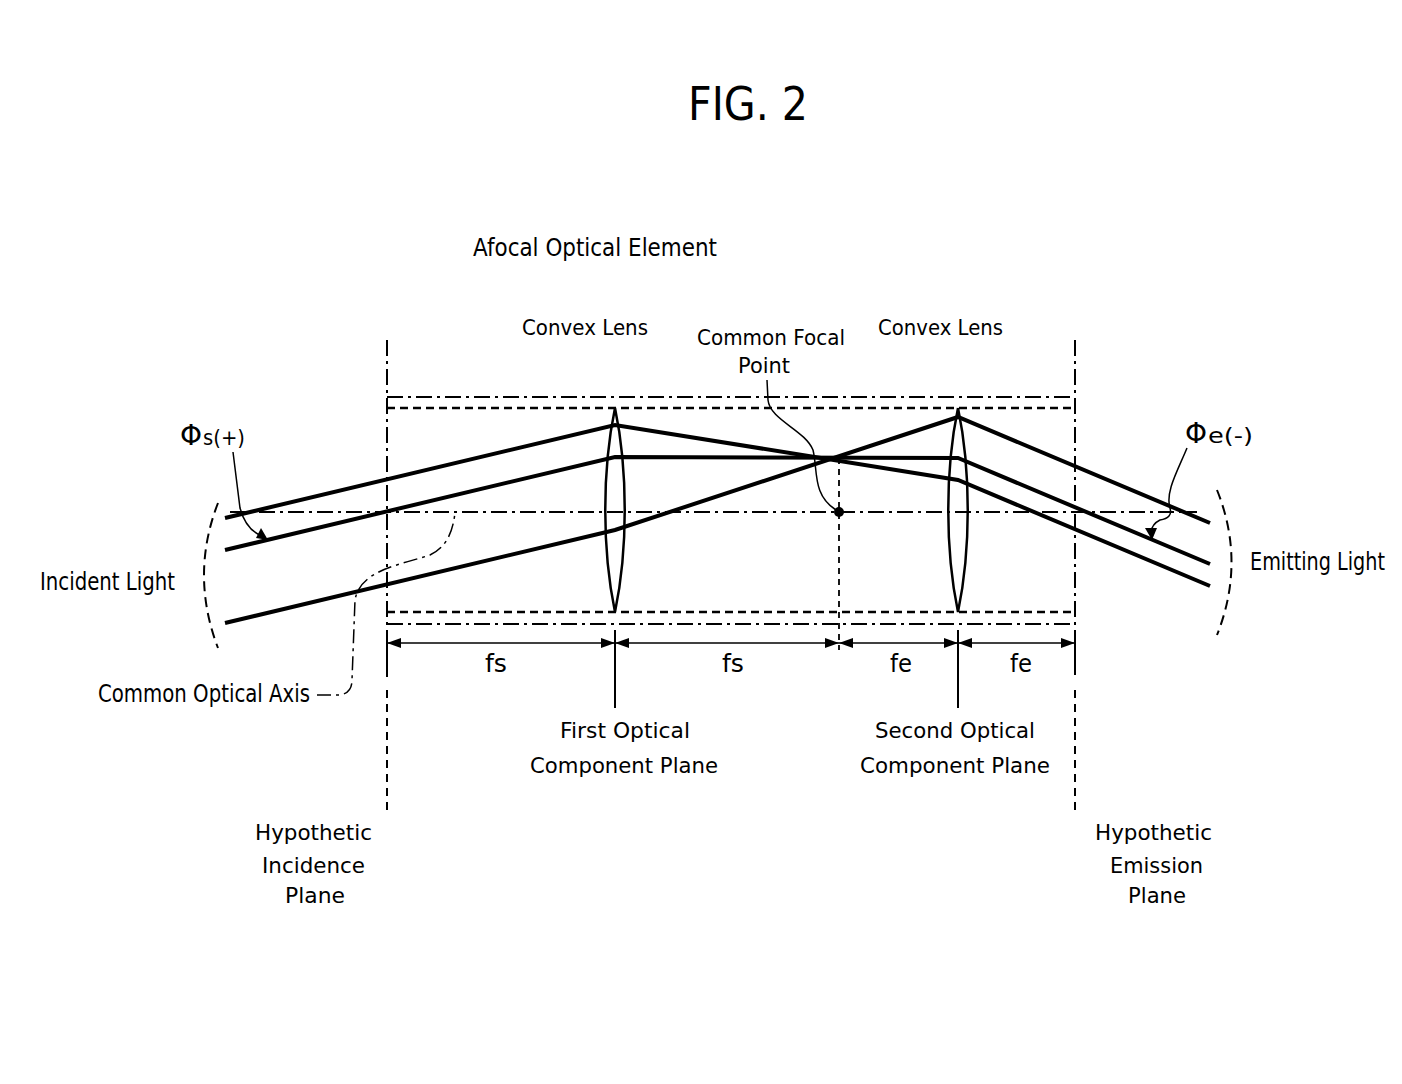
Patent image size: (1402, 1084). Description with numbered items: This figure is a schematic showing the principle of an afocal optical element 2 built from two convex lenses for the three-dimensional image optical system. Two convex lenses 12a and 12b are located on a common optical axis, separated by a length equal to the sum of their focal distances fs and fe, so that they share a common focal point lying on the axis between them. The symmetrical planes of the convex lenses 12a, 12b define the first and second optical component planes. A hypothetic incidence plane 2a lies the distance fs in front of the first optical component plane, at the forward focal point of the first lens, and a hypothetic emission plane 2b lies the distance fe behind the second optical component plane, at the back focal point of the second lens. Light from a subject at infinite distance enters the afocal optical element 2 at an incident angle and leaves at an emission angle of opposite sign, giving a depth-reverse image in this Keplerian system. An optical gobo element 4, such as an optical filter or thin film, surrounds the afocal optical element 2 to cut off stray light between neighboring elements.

The afocal optical element 2 is at (484, 395).
The hypothetic incidence plane 2a is at (387, 445).
The hypothetic emission plane 2b is at (1077, 442).
The optical gobo element 4 is at (1025, 395).
The convex lens 12a is at (615, 413).
The convex lens 12b is at (958, 411).